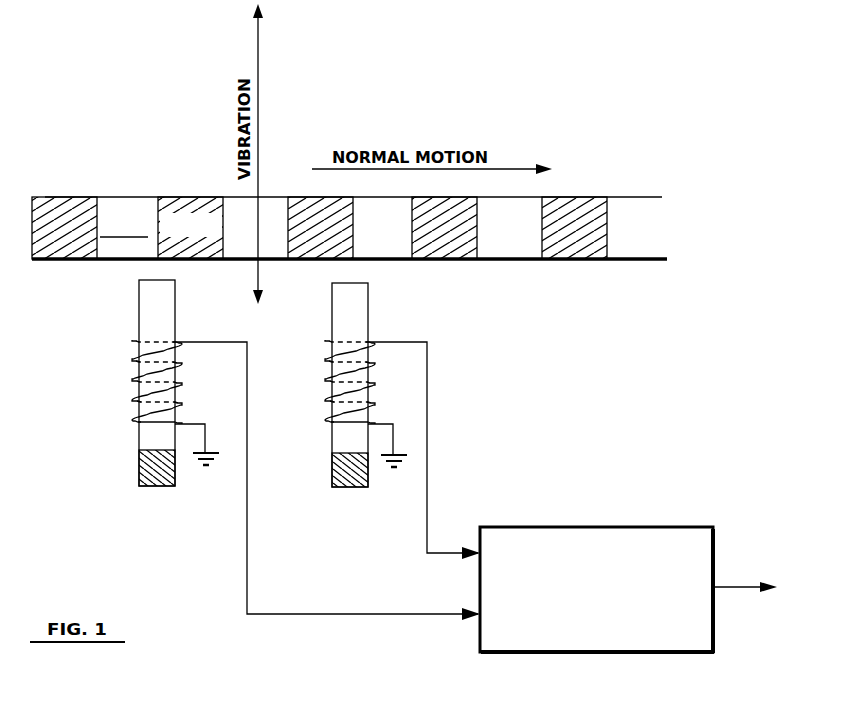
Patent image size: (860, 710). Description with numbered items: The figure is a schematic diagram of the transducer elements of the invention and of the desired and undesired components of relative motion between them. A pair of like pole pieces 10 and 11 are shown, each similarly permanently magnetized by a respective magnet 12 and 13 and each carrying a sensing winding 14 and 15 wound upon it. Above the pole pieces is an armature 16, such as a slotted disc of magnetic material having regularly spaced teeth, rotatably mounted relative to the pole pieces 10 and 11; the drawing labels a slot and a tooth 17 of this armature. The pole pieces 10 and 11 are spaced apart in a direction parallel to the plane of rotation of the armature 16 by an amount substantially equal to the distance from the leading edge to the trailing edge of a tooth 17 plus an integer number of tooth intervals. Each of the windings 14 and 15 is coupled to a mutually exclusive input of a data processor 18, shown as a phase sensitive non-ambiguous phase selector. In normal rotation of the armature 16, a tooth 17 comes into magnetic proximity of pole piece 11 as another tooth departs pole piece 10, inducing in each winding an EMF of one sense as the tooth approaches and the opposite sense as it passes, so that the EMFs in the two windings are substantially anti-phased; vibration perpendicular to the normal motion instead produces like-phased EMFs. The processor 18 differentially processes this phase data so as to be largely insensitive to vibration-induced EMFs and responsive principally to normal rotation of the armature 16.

The pole piece 10 is at (162, 304).
The pole piece 11 is at (345, 311).
The magnet 12 is at (142, 470).
The magnet 13 is at (330, 473).
The sensing winding 14 is at (130, 376).
The sensing winding 15 is at (325, 350).
The armature 16 is at (128, 188).
The tooth 17 is at (190, 212).
The data processor 18 is at (588, 535).